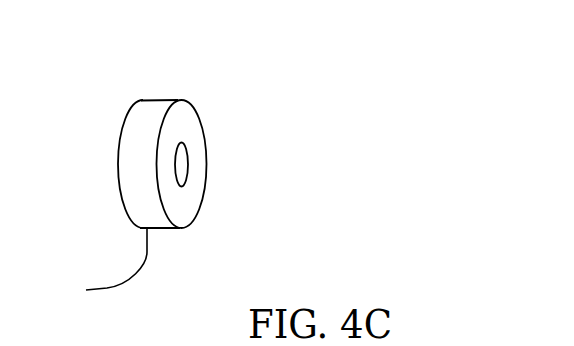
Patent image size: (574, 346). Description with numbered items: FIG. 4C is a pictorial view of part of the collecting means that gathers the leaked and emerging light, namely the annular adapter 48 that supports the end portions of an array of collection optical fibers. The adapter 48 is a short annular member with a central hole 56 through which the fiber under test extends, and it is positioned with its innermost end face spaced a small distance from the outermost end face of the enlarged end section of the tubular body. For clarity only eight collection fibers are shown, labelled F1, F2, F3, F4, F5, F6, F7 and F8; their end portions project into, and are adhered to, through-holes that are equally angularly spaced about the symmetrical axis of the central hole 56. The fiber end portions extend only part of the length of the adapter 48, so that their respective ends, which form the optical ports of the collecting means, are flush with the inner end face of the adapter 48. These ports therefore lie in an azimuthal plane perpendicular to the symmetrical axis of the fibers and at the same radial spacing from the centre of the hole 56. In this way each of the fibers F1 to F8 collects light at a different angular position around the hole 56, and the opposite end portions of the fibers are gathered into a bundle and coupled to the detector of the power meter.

The central hole 56 is at (172, 162).
The annular adapter 48 is at (105, 264).
The optical fiber F1 is at (175, 123).
The optical fiber F2 is at (193, 146).
The optical fiber F3 is at (158, 172).
The optical fiber F4 is at (188, 193).
The optical fiber F5 is at (173, 222).
The optical fiber F6 is at (163, 197).
The optical fiber F7 is at (193, 175).
The optical fiber F8 is at (158, 144).